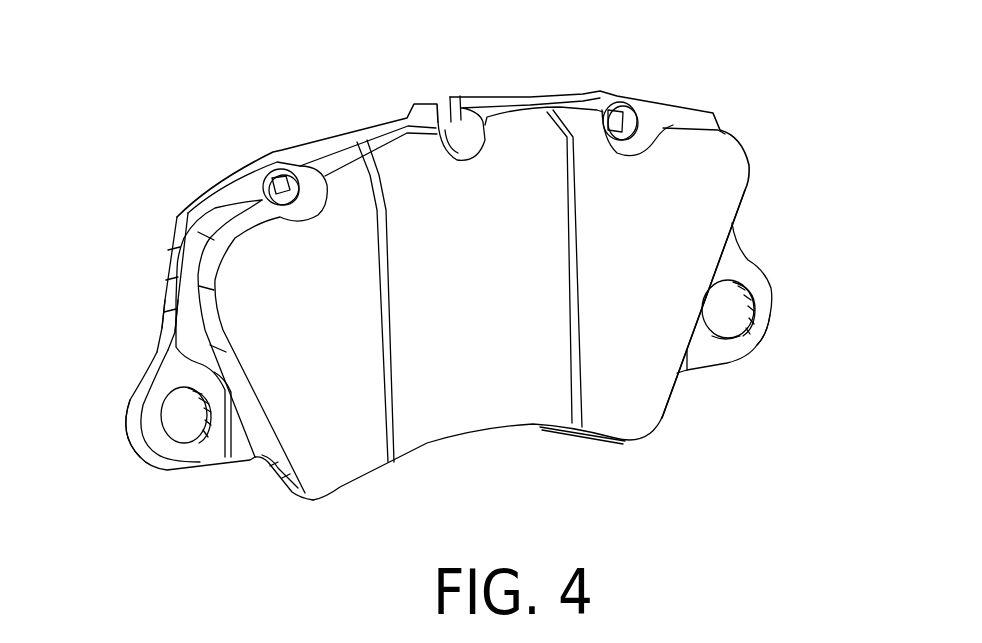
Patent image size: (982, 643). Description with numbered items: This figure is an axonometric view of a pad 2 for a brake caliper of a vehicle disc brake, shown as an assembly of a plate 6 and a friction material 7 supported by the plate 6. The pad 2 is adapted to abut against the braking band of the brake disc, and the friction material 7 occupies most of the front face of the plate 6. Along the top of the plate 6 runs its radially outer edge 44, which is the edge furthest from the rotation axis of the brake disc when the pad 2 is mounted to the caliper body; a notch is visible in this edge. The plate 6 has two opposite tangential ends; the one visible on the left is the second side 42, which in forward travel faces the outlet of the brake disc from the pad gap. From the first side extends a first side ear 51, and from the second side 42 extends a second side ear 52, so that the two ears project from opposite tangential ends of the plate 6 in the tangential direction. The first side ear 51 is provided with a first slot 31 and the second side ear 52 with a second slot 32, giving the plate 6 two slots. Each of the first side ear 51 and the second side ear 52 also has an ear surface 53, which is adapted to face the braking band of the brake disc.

The pad 2 is at (755, 115).
The plate 6 is at (613, 97).
The friction material 7 is at (640, 390).
The first slot 31 is at (718, 313).
The second slot 32 is at (173, 411).
The second side 42 is at (167, 303).
The radially outer edge 44 is at (412, 100).
The first side ear 51 is at (757, 288).
The second side ear 52 is at (167, 384).
The ear surface 53 is at (160, 458).